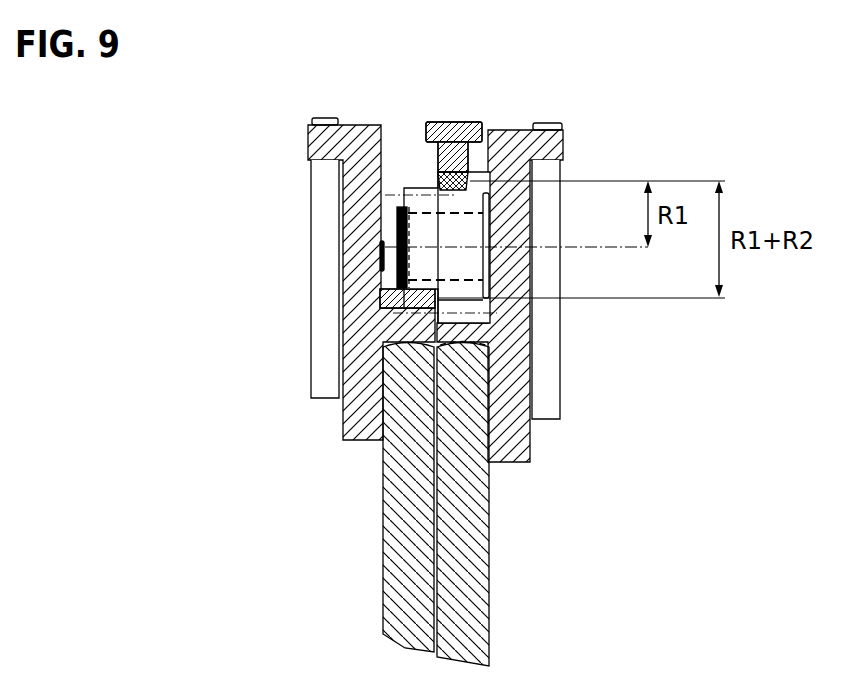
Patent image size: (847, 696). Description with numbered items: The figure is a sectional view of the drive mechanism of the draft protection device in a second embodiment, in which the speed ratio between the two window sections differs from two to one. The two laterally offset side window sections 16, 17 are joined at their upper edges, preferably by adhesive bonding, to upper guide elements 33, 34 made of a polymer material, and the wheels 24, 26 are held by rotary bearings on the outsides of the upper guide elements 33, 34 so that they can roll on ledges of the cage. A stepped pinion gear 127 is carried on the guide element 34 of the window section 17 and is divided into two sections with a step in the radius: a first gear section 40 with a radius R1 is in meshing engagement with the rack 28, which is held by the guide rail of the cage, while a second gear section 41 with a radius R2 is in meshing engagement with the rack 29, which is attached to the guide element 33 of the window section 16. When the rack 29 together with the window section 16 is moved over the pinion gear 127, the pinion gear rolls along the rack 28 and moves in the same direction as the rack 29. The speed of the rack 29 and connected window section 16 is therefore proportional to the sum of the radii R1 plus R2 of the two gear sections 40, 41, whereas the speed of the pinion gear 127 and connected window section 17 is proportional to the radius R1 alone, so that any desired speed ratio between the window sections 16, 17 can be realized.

The pinion gear 127 is at (418, 168).
The rack 28 is at (483, 135).
The second gear section 41 is at (423, 237).
The first gear section 40 is at (462, 232).
The wheel 24 is at (323, 280).
The rack 29 is at (400, 310).
The wheel 26 is at (545, 323).
The upper guide element 33 is at (362, 403).
The upper guide element 34 is at (513, 423).
The window section 16 is at (412, 608).
The window section 17 is at (462, 603).